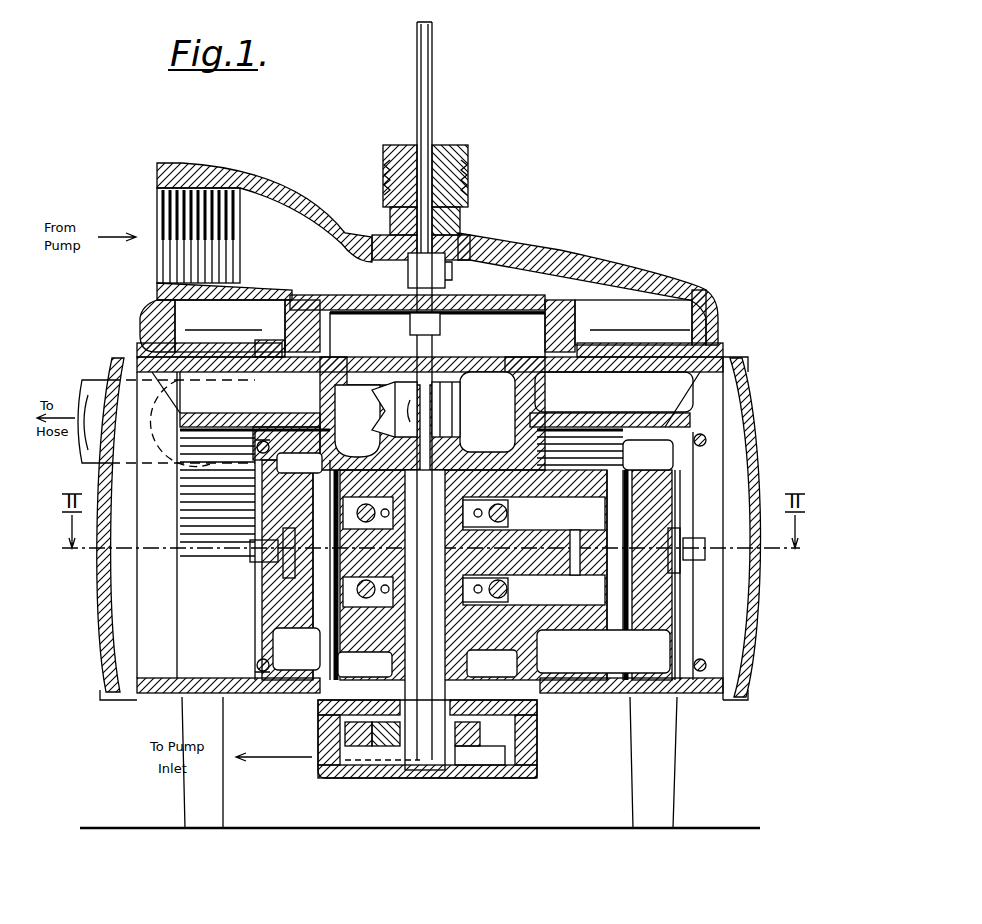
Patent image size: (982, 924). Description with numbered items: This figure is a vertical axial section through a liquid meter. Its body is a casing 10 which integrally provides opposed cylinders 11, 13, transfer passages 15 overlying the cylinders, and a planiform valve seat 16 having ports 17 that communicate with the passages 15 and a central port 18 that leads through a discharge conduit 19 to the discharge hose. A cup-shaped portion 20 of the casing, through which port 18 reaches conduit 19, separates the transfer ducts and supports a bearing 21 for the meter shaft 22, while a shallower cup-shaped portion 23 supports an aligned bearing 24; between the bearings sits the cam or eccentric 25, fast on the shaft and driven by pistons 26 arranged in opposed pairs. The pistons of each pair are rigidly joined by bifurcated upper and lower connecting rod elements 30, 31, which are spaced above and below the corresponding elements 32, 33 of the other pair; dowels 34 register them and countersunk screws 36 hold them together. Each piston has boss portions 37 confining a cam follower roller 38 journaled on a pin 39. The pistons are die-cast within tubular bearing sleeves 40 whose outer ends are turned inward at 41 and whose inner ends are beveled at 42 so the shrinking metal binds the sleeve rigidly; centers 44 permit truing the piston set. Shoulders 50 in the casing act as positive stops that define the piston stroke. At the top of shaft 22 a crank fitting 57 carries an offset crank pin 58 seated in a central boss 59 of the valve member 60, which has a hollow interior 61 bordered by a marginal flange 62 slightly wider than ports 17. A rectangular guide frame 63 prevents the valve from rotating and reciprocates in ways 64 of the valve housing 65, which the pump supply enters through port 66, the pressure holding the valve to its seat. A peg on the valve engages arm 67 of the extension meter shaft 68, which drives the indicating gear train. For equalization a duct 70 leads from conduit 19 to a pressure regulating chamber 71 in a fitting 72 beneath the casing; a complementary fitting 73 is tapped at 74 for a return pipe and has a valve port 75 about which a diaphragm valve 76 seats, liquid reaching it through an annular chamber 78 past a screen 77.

The casing 10 is at (210, 694).
The cylinder 11 is at (195, 598).
The cylinder 13 is at (603, 690).
The transfer passage 15 is at (235, 378).
The planiform valve seat 16 is at (260, 332).
The port 17 is at (436, 399).
The central port 18 is at (472, 357).
The discharge conduit 19 is at (362, 398).
The cup-shaped portion 20 is at (436, 409).
The bearing 21 is at (465, 455).
The meter shaft 22 is at (510, 410).
The cup-shaped portion 23 is at (516, 686).
The bearing 24 is at (390, 666).
The cam or eccentric 25 is at (548, 535).
The piston 26 is at (265, 618).
The upper connecting rod element 30 is at (476, 510).
The lower connecting rod element 31 is at (572, 636).
The upper connecting rod element 32 is at (512, 512).
The lower connecting rod element 33 is at (512, 584).
The dowel 34 is at (500, 504).
The screw 36 is at (522, 508).
The boss portion 37 is at (283, 518).
The cam follower roller 38 is at (282, 572).
The pin 39 is at (318, 490).
The tubular bearing sleeve 40 is at (678, 425).
The inturned sleeve end 41 is at (236, 662).
The beveled sleeve end 42 is at (636, 420).
The center 44 is at (262, 556).
The shoulder 50 is at (560, 668).
The crank fitting 57 is at (487, 413).
The crank pin 58 is at (420, 330).
The central boss 59 is at (440, 302).
The valve member 60 is at (380, 303).
The hollow interior 61 is at (520, 305).
The marginal flange 62 is at (260, 330).
The rectangular guide frame 63 is at (300, 300).
The ways 64 is at (240, 297).
The valve housing 65 is at (618, 275).
The port 66 is at (178, 203).
The arm 67 is at (500, 262).
The extension meter shaft 68 is at (433, 118).
The duct 70 is at (296, 649).
The pressure regulating chamber 71 is at (452, 676).
The fitting 72 is at (537, 708).
The complementary fitting 73 is at (538, 770).
The tapped return connection 74 is at (336, 780).
The valve port 75 is at (418, 770).
The diaphragm valve 76 is at (420, 700).
The screen 77 is at (375, 777).
The annular chamber 78 is at (480, 778).